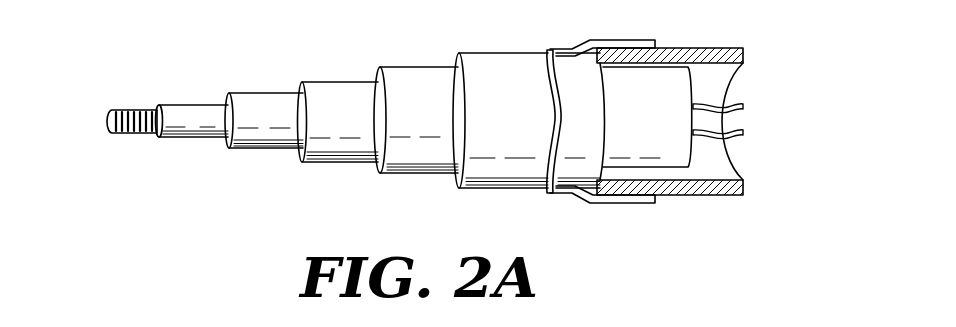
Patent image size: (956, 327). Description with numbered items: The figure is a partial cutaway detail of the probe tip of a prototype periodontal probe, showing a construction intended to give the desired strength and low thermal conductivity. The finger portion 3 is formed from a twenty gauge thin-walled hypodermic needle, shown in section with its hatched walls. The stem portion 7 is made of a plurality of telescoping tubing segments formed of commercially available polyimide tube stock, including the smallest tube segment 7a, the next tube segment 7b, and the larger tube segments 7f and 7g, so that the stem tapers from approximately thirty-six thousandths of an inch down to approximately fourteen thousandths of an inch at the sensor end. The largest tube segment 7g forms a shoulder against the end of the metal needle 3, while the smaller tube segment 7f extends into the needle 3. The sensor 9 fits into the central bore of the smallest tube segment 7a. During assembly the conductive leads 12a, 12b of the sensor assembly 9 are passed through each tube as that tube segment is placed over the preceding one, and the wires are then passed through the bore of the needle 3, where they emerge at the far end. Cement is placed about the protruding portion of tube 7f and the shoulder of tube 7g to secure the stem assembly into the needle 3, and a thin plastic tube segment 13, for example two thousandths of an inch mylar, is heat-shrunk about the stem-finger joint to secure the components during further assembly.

The stem portion 7 is at (560, 50).
The sensor 9 is at (134, 133).
The smallest tube segment 7a is at (198, 140).
The tube segment 7b is at (268, 150).
The tube segment 7f is at (382, 170).
The largest tube segment 7g is at (510, 188).
The thin plastic tube segment 13 is at (617, 46).
The finger portion 3 is at (684, 48).
The conductive lead 12a is at (733, 103).
The conductive lead 12b is at (733, 133).